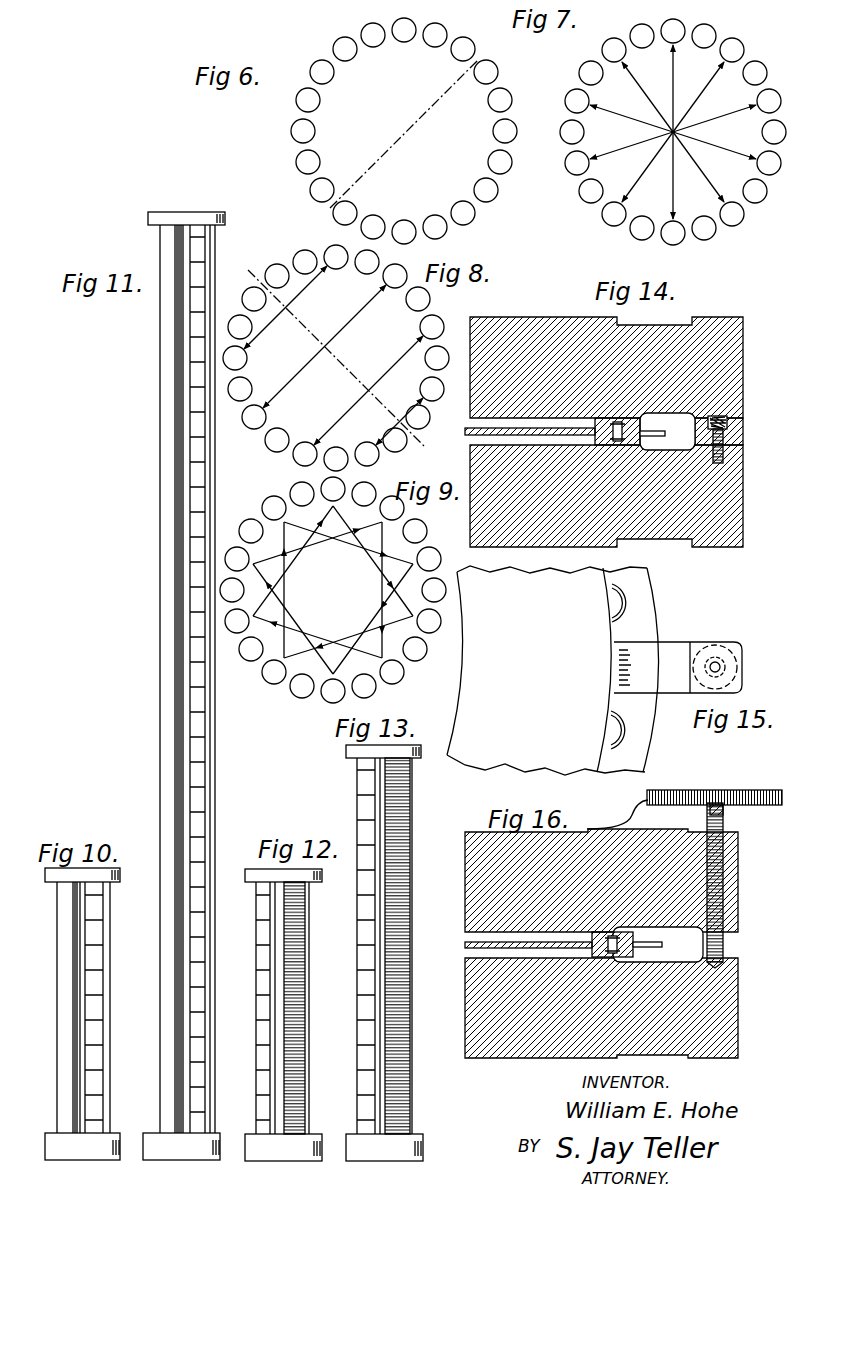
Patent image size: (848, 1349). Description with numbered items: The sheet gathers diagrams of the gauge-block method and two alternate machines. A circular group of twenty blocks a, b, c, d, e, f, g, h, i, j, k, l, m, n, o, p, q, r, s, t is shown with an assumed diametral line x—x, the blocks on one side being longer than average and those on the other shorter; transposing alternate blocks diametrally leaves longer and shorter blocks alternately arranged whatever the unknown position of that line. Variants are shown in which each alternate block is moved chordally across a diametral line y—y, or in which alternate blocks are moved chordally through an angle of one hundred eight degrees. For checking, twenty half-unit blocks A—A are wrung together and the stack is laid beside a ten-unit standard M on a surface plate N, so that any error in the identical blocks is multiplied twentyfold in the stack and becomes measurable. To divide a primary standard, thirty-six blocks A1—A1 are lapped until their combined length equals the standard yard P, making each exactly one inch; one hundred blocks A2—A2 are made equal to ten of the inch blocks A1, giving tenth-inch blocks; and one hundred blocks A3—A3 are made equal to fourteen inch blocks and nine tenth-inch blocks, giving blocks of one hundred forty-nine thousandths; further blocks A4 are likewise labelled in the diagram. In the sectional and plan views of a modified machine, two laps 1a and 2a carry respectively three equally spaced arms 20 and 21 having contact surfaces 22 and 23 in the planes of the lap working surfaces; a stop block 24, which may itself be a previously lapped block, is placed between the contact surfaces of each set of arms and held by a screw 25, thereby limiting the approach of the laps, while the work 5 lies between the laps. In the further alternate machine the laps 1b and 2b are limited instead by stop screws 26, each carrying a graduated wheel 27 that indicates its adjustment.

In FIG. 6, the gauge block a is at (492, 72).
In FIG. 7, the gauge block a is at (761, 73).
In FIG. 8, the gauge block a is at (414, 302).
In FIG. 9, the gauge block a is at (412, 537).
In FIG. 6, the gauge block b is at (506, 100).
In FIG. 7, the gauge block b is at (569, 165).
In FIG. 8, the gauge block b is at (305, 449).
In FIG. 9, the gauge block b is at (333, 686).
In FIG. 6, the gauge block c is at (510, 131).
In FIG. 7, the gauge block c is at (779, 132).
In FIG. 8, the gauge block c is at (431, 358).
In FIG. 9, the gauge block c is at (429, 590).
In FIG. 6, the gauge block d is at (505, 163).
In FIG. 7, the gauge block d is at (569, 101).
In FIG. 8, the gauge block d is at (367, 448).
In FIG. 9, the gauge block d is at (279, 670).
In FIG. 6, the gauge block e is at (490, 191).
In FIG. 7, the gauge block e is at (759, 193).
In FIG. 8, the gauge block e is at (411, 417).
In FIG. 9, the gauge block e is at (410, 649).
In FIG. 6, the gauge block f is at (466, 218).
In FIG. 7, the gauge block f is at (605, 50).
In FIG. 8, the gauge block f is at (393, 434).
In FIG. 9, the gauge block f is at (238, 622).
In FIG. 6, the gauge block g is at (437, 232).
In FIG. 7, the gauge block g is at (706, 233).
In FIG. 8, the gauge block g is at (425, 389).
In FIG. 9, the gauge block g is at (363, 681).
In FIG. 6, the gauge block h is at (404, 240).
In FIG. 7, the gauge block h is at (670, 25).
In FIG. 8, the gauge block h is at (336, 452).
In FIG. 9, the gauge block h is at (239, 565).
In FIG. 6, the gauge block i is at (369, 232).
In FIG. 7, the gauge block i is at (637, 235).
In FIG. 8, the gauge block i is at (426, 328).
In FIG. 9, the gauge block i is at (302, 681).
In FIG. 6, the gauge block j is at (340, 220).
In FIG. 7, the gauge block j is at (736, 50).
In FIG. 8, the gauge block j is at (277, 435).
In FIG. 9, the gauge block j is at (274, 517).
In FIG. 6, the gauge block k is at (315, 192).
In FIG. 7, the gauge block k is at (584, 193).
In FIG. 8, the gauge block k is at (394, 285).
In FIG. 9, the gauge block k is at (256, 649).
In FIG. 6, the gauge block l is at (301, 164).
In FIG. 7, the gauge block l is at (773, 101).
In FIG. 8, the gauge block l is at (243, 389).
In FIG. 9, the gauge block l is at (333, 498).
In FIG. 6, the gauge block m is at (293, 132).
In FIG. 7, the gauge block m is at (563, 132).
In FIG. 8, the gauge block m is at (336, 264).
In FIG. 9, the gauge block m is at (240, 590).
In FIG. 6, the gauge block n is at (301, 100).
In FIG. 7, the gauge block n is at (774, 164).
In FIG. 8, the gauge block n is at (245, 326).
In FIG. 9, the gauge block n is at (392, 514).
In FIG. 6, the gauge block o is at (314, 72).
In FIG. 7, the gauge block o is at (584, 73).
In FIG. 8, the gauge block o is at (279, 278).
In FIG. 9, the gauge block o is at (252, 536).
In FIG. 6, the gauge block p is at (335, 49).
In FIG. 7, the gauge block p is at (735, 221).
In FIG. 8, the gauge block p is at (259, 299).
In FIG. 9, the gauge block p is at (425, 566).
In FIG. 6, the gauge block q is at (367, 33).
In FIG. 7, the gauge block q is at (637, 34).
In FIG. 8, the gauge block q is at (305, 268).
In FIG. 9, the gauge block q is at (302, 501).
In FIG. 6, the gauge block r is at (404, 24).
In FIG. 7, the gauge block r is at (673, 241).
In FIG. 8, the gauge block r is at (240, 356).
In FIG. 9, the gauge block r is at (423, 622).
In FIG. 6, the gauge block s is at (440, 34).
In FIG. 7, the gauge block s is at (710, 35).
In FIG. 8, the gauge block s is at (367, 270).
In FIG. 9, the gauge block s is at (364, 500).
In FIG. 6, the gauge block t is at (471, 49).
In FIG. 7, the gauge block t is at (609, 219).
In FIG. 8, the gauge block t is at (260, 415).
In FIG. 9, the gauge block t is at (386, 669).
In FIG. 6, the diametral line x is at (407, 125).
In FIG. 8, the diametral line y is at (334, 361).
In FIG. 10, the gauge block A is at (103, 892).
In FIG. 14, the gauge block A is at (646, 431).
In FIG. 16, the gauge block A is at (638, 942).
In FIG. 11, the inch gauge block A1 is at (215, 238).
In FIG. 12, the inch gauge block A1 is at (256, 893).
In FIG. 13, the inch gauge block A1 is at (362, 1097).
In FIG. 11, the tenth-inch gauge block A2 is at (198, 1097).
In FIG. 12, the tenth-inch gauge block A2 is at (309, 893).
In FIG. 13, the tenth-inch gauge block A2 is at (357, 768).
In FIG. 13, the gauge block A3 is at (412, 768).
In FIG. 12, the pin bar A4 is at (305, 1123).
In FIG. 10, the ten-unit standard M is at (57, 1004).
In FIG. 10, the surface plate N is at (50, 1146).
In FIG. 11, the surface plate N is at (150, 1146).
In FIG. 12, the surface plate N is at (252, 1147).
In FIG. 13, the surface plate N is at (352, 1147).
In FIG. 11, the standard yard P is at (160, 597).
In FIG. 14, the lap 1a is at (580, 340).
In FIG. 14, the lap 2a is at (590, 510).
In FIG. 16, the upper die block 1b is at (590, 876).
In FIG. 16, the lower die block 2b is at (590, 1007).
In FIG. 14, the pin 5 is at (662, 436).
In FIG. 16, the pin 5 is at (656, 953).
In FIG. 14, the arm 20 is at (723, 368).
In FIG. 15, the arm 20 is at (726, 644).
In FIG. 14, the arm 21 is at (723, 492).
In FIG. 14, the contact surface 22 is at (700, 420).
In FIG. 14, the contact surface 23 is at (720, 456).
In FIG. 14, the stop block 24 is at (727, 424).
In FIG. 15, the stop block 24 is at (722, 662).
In FIG. 14, the screw 25 is at (724, 437).
In FIG. 15, the screw 25 is at (718, 669).
In FIG. 16, the stop screw 26 is at (724, 822).
In FIG. 16, the graduated wheel 27 is at (647, 798).